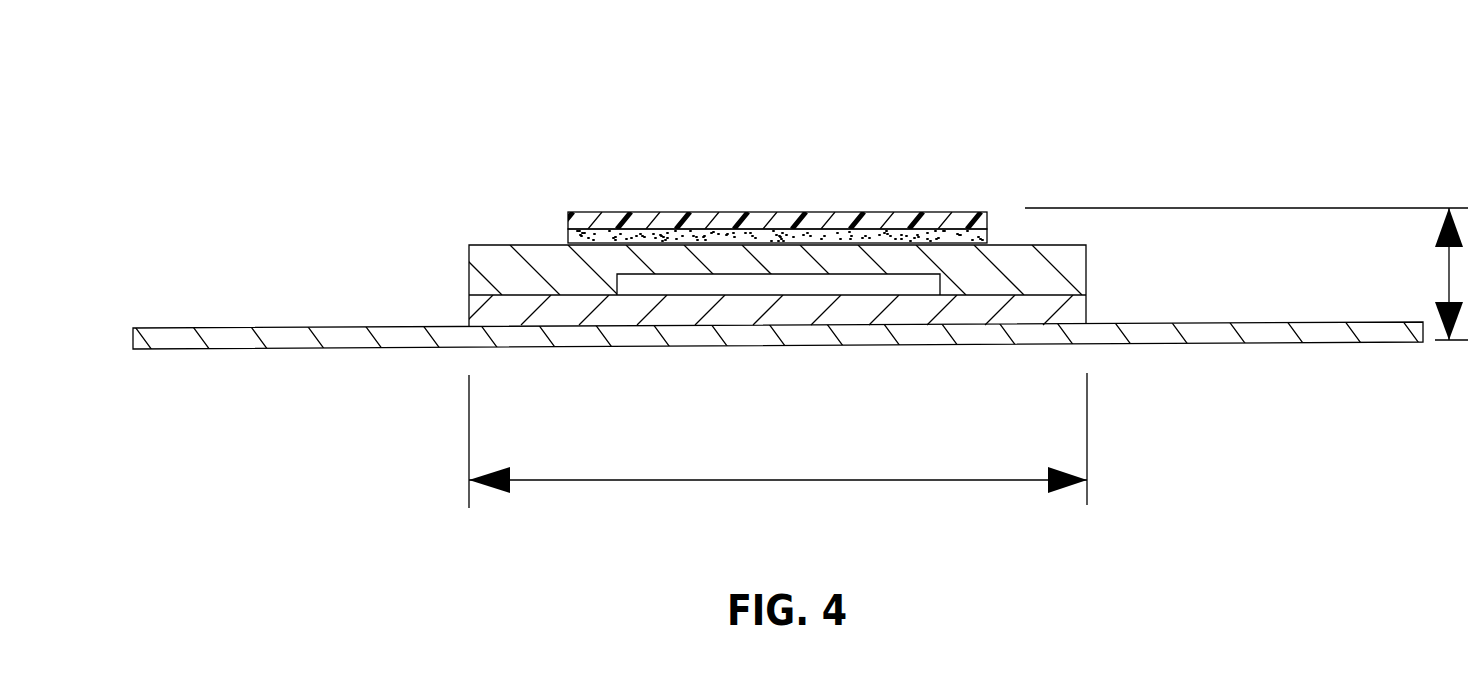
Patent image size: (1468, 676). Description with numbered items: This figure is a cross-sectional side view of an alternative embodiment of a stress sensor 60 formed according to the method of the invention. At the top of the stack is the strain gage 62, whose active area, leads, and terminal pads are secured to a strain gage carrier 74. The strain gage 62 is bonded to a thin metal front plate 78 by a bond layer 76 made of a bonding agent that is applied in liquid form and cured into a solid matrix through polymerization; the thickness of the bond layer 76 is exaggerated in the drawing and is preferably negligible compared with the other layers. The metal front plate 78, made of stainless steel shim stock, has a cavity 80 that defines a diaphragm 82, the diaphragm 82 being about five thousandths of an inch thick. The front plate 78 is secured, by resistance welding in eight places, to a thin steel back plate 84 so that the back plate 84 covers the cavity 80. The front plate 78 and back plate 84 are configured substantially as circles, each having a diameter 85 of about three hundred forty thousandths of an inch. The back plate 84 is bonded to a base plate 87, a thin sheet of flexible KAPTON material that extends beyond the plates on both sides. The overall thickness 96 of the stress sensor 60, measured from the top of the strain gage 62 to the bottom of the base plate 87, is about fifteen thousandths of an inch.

The stress sensor 60 is at (602, 110).
The strain gage 62 is at (787, 212).
The strain gage carrier 74 is at (960, 220).
The bond layer 76 is at (993, 235).
The metal front plate 78 is at (958, 278).
The cavity 80 is at (672, 283).
The diaphragm 82 is at (730, 262).
The back plate 84 is at (843, 310).
The diameter 85 is at (850, 480).
The base plate 87 is at (283, 338).
The thickness 96 is at (1445, 292).